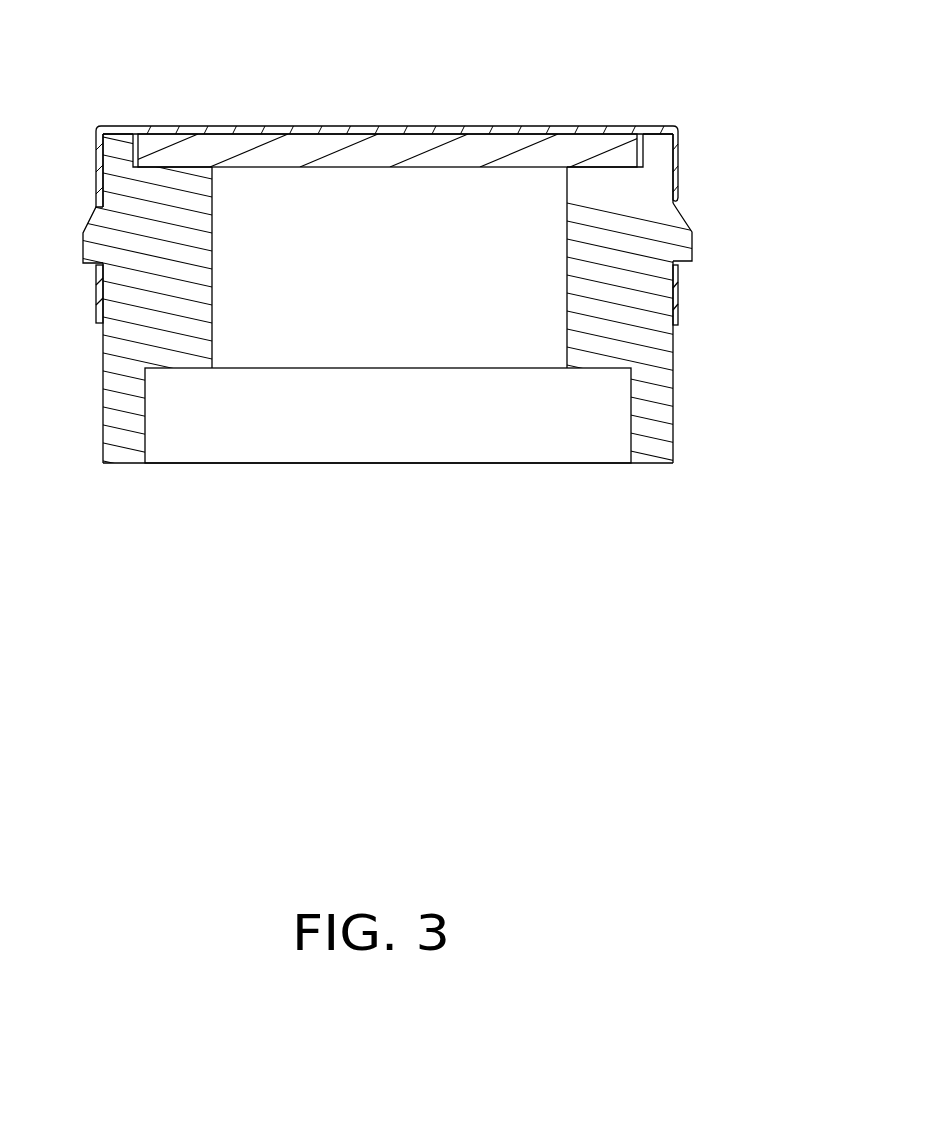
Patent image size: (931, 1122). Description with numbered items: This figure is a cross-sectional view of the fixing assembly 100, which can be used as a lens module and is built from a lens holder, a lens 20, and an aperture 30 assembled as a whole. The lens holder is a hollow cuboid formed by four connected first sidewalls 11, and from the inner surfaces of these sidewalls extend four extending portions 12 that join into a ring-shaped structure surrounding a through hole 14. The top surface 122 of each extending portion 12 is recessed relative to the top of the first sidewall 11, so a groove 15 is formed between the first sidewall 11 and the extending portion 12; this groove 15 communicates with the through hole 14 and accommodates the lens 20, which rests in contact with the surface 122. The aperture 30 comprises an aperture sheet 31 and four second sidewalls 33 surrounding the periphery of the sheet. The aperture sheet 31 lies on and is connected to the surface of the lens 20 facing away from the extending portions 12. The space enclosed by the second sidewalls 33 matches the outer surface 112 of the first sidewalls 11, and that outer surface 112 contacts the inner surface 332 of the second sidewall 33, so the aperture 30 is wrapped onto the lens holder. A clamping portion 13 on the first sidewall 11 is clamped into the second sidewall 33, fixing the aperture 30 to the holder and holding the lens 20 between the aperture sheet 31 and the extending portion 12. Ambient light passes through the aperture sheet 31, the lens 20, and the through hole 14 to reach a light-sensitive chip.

The fixing assembly 100 is at (445, 12).
The first sidewall 11 is at (663, 388).
The extending portion 12 is at (588, 305).
The clamping portion 13 is at (683, 248).
The outer surface 112 is at (680, 308).
The through hole 14 is at (389, 207).
The groove 15 is at (132, 134).
The surface 122 is at (607, 163).
The lens 20 is at (298, 148).
The aperture 30 is at (446, 154).
The aperture sheet 31 is at (643, 126).
The second sidewall 33 is at (680, 167).
The inner surface 332 is at (661, 179).